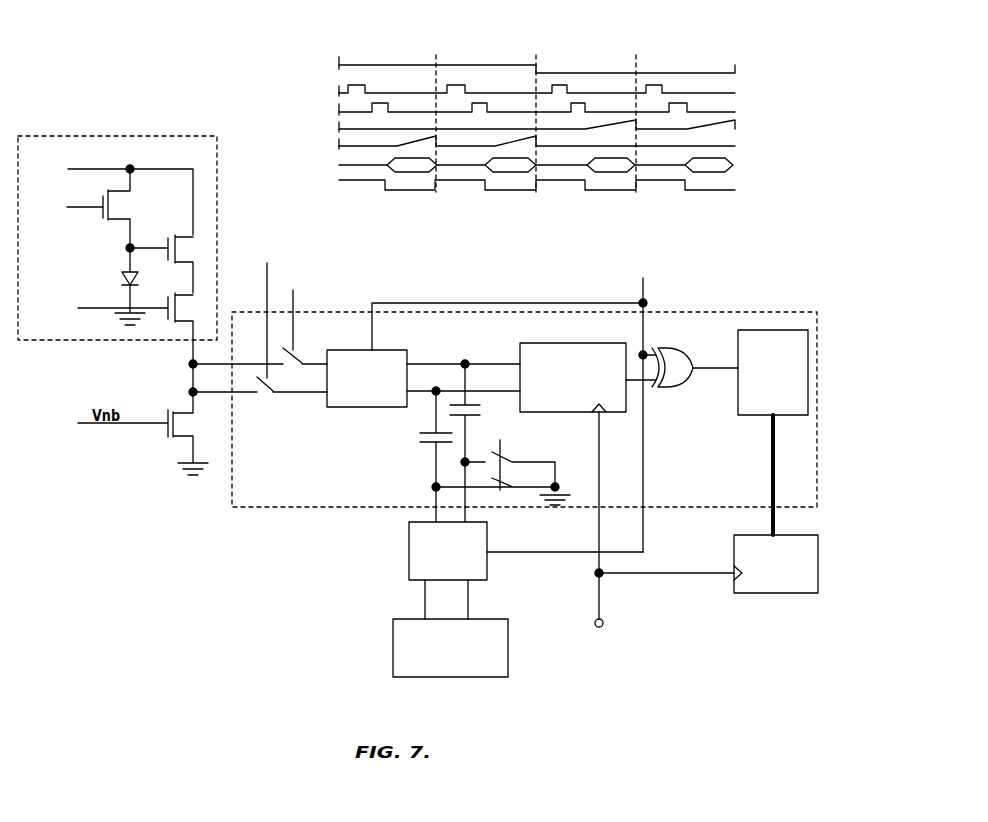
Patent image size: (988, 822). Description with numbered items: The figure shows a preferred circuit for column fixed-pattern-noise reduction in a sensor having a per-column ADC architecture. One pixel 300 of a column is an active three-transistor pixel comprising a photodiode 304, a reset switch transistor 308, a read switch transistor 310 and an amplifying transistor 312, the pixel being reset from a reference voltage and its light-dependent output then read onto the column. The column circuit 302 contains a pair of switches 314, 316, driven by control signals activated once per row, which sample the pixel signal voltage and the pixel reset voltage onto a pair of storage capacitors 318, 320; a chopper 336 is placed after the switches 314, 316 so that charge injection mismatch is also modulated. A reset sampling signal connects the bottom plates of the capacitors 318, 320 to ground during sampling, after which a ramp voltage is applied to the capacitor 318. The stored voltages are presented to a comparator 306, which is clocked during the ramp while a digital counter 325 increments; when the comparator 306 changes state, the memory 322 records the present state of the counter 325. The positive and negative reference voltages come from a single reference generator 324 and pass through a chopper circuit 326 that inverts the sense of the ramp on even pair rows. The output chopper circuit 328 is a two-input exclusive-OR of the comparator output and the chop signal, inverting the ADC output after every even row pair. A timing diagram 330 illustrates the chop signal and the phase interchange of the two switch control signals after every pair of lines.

The pixel 300 is at (116, 136).
The column circuit 302 is at (672, 312).
The photodiode 304 is at (122, 282).
The comparator 306 is at (578, 343).
The reset switch transistor 308 is at (103, 216).
The read switch transistor 310 is at (190, 312).
The amplifying transistor 312 is at (190, 247).
The switch 314 is at (292, 355).
The switch 316 is at (265, 410).
The storage capacitor 318 is at (478, 398).
The storage capacitor 320 is at (420, 448).
The memory 322 is at (765, 330).
The reference generator 324 is at (508, 672).
The digital counter 325 is at (760, 593).
The chopper circuit 326 is at (409, 568).
The output chopper circuit 328 is at (672, 388).
The timing diagram 330 is at (568, 38).
The chopper 336 is at (388, 350).